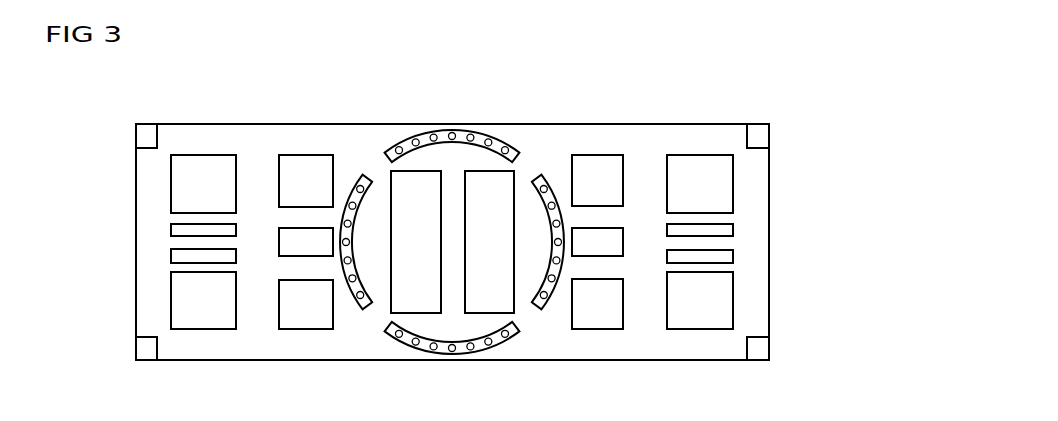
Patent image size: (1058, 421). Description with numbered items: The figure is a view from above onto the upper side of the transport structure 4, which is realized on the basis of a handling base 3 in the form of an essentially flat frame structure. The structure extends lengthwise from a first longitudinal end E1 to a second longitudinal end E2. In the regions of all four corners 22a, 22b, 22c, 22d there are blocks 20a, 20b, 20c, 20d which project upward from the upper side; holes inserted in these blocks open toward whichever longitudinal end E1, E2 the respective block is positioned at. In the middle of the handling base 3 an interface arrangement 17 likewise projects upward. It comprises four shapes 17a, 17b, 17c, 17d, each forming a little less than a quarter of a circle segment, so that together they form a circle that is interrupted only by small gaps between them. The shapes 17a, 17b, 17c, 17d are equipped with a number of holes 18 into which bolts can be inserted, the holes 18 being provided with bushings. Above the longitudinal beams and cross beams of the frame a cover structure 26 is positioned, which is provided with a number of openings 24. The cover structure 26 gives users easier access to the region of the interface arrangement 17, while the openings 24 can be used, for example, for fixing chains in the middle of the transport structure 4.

The handling base 3 is at (507, 191).
The transport structure 4 is at (678, 97).
The first longitudinal end E1 is at (808, 199).
The second longitudinal end E2 is at (108, 224).
The interface arrangement 17 is at (535, 157).
The shape 17a is at (342, 250).
The shape 17b is at (565, 249).
The shape 17c is at (452, 367).
The shape 17d is at (434, 134).
The hole 18 is at (413, 345).
The block 20a is at (760, 138).
The block 20b is at (758, 348).
The block 20c is at (142, 138).
The block 20d is at (142, 349).
The corner 22a is at (769, 124).
The corner 22b is at (769, 360).
The corner 22c is at (136, 124).
The corner 22d is at (136, 360).
The opening 24 is at (722, 298).
The cover structure 26 is at (762, 264).